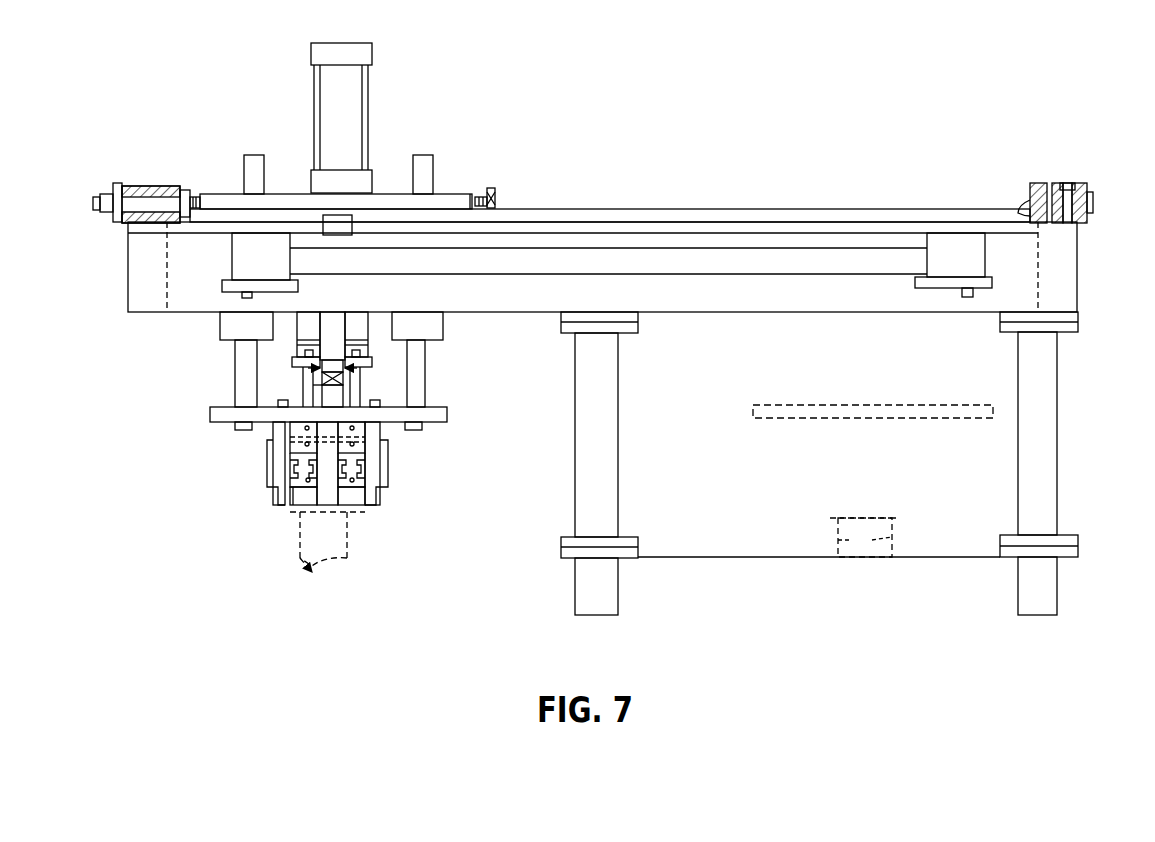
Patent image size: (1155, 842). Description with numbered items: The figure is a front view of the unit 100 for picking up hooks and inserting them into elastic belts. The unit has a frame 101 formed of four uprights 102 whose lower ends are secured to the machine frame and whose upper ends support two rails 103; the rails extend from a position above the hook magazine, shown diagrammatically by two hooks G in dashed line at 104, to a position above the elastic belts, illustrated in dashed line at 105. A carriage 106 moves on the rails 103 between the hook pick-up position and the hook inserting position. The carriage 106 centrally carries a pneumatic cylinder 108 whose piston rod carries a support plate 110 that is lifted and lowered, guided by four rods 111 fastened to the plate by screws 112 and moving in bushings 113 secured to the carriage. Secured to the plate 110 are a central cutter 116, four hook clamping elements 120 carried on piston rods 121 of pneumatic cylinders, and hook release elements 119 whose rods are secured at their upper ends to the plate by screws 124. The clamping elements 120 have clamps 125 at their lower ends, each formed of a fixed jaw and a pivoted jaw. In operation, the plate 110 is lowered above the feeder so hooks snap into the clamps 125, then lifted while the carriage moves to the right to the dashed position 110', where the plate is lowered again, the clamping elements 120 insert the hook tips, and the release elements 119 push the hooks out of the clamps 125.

The transfer apparatus 100 is at (689, 191).
The frame 101 is at (1080, 277).
The uprights 102 is at (612, 434).
The rails 103 is at (834, 216).
The hook magazine 104 is at (345, 506).
The elastic belts position 105 is at (886, 562).
The carriage 106 is at (349, 182).
The pneumatic cylinder 108 is at (352, 86).
The support plate 110 is at (299, 420).
The support plate position 110' is at (873, 427).
The rods 111 is at (250, 153).
The screws 112 is at (240, 430).
The bushings 113 is at (228, 326).
The cutter 116 is at (282, 470).
The release elements 119 is at (305, 478).
The hook clamping elements 120 is at (296, 506).
The piston rods 121 is at (300, 378).
The screws 124 is at (330, 400).
The clamps 125 is at (347, 492).